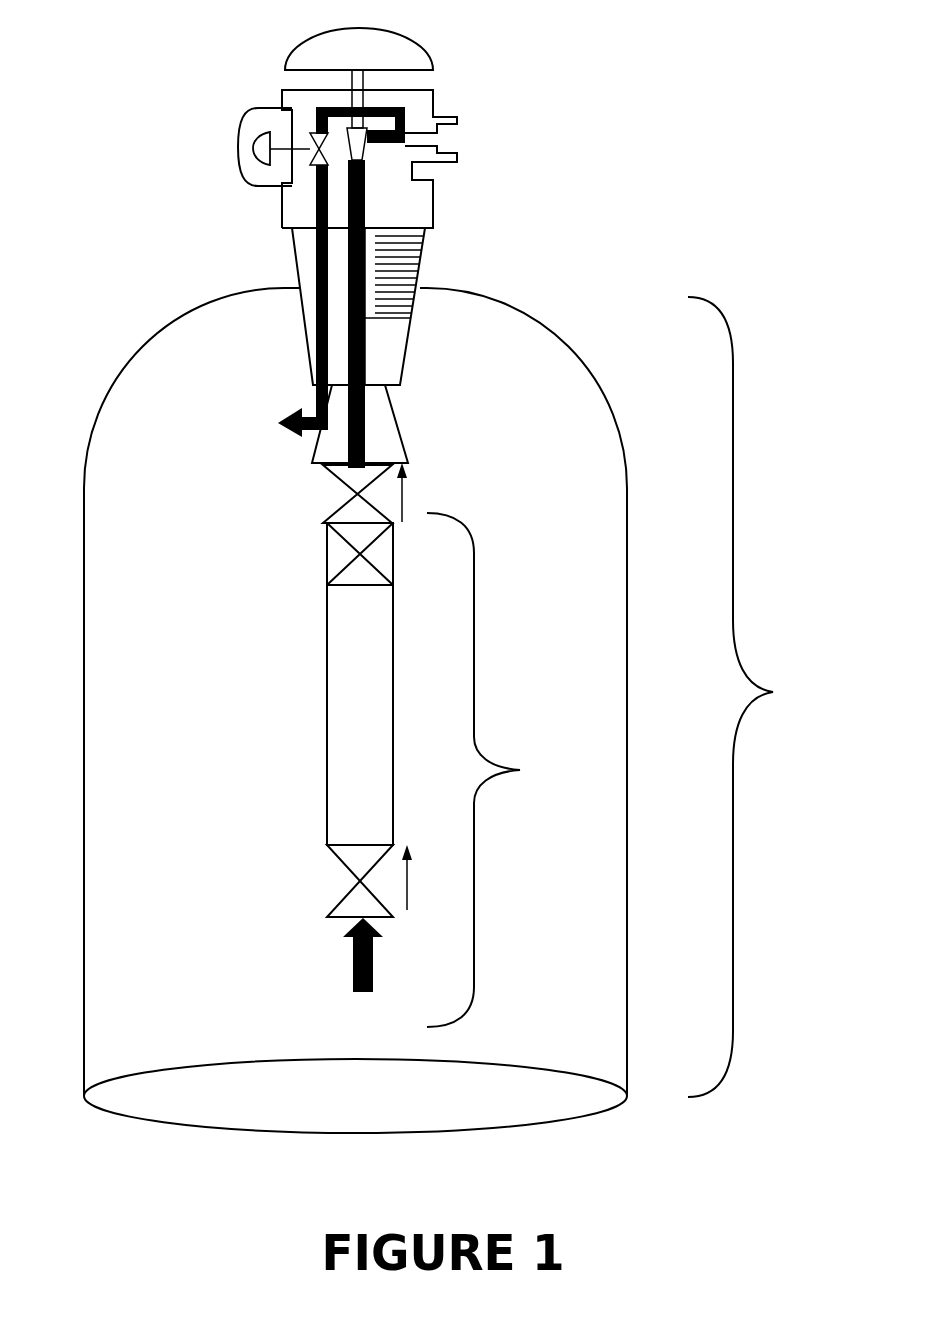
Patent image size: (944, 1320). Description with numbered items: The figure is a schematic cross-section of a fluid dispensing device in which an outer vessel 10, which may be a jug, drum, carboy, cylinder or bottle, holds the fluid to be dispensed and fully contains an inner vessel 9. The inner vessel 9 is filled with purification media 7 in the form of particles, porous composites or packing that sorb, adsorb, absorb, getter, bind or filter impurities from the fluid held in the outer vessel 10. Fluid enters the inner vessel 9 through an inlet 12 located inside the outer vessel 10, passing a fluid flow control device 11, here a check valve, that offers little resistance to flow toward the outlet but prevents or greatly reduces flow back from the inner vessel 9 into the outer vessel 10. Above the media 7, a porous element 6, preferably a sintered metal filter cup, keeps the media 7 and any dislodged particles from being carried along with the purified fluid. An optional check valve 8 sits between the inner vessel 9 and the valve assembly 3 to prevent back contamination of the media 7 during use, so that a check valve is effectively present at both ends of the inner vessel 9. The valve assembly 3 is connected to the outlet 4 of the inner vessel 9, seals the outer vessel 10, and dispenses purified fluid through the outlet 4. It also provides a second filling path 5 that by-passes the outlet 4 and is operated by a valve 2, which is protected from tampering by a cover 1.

The cover 1 is at (228, 110).
The valve 2 is at (252, 158).
The valve assembly 3 is at (455, 48).
The outlet 4 is at (478, 150).
The second filling path 5 is at (267, 425).
The porous element 6 is at (325, 557).
The purification media 7 is at (360, 783).
The check valve 8 is at (337, 498).
The inner vessel 9 is at (485, 770).
The outer vessel 10 is at (450, 710).
The fluid flow control device 11 is at (327, 880).
The inlet 12 is at (345, 963).